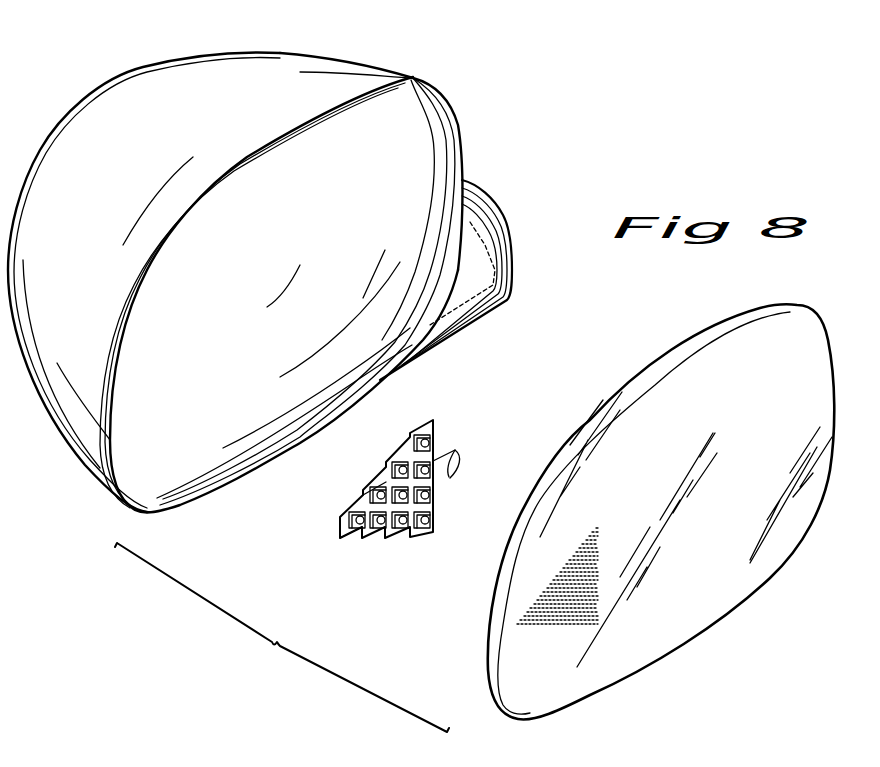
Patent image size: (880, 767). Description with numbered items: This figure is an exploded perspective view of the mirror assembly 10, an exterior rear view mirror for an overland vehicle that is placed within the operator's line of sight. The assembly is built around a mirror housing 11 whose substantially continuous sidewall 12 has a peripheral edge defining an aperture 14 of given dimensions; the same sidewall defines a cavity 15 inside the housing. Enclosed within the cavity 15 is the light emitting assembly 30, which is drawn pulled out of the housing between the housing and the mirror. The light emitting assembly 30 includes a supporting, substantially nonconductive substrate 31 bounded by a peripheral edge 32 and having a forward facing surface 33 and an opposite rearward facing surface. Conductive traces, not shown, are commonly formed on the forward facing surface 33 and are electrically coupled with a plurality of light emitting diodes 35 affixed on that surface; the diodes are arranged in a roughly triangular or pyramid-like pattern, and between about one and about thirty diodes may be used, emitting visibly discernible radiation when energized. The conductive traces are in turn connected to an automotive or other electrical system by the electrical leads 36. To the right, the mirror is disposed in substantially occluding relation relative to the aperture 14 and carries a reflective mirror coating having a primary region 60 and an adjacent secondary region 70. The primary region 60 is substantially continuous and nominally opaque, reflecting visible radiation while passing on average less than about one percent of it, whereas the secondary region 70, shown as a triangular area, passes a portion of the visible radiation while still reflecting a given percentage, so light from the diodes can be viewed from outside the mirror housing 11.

The mirror assembly 10 is at (583, 145).
The mirror housing 11 is at (239, 80).
The continuous sidewall 12 is at (77, 152).
The aperture 14 is at (385, 153).
The cavity 15 is at (165, 413).
The light emitting assembly 30 is at (490, 455).
The supporting substrate 31 is at (427, 447).
The peripheral edge 32 is at (418, 427).
The forward facing surface 33 is at (362, 500).
The light emitting diodes 35 is at (386, 527).
The electrical leads 36 is at (433, 472).
The primary region 60 is at (718, 582).
The secondary region 70 is at (546, 640).